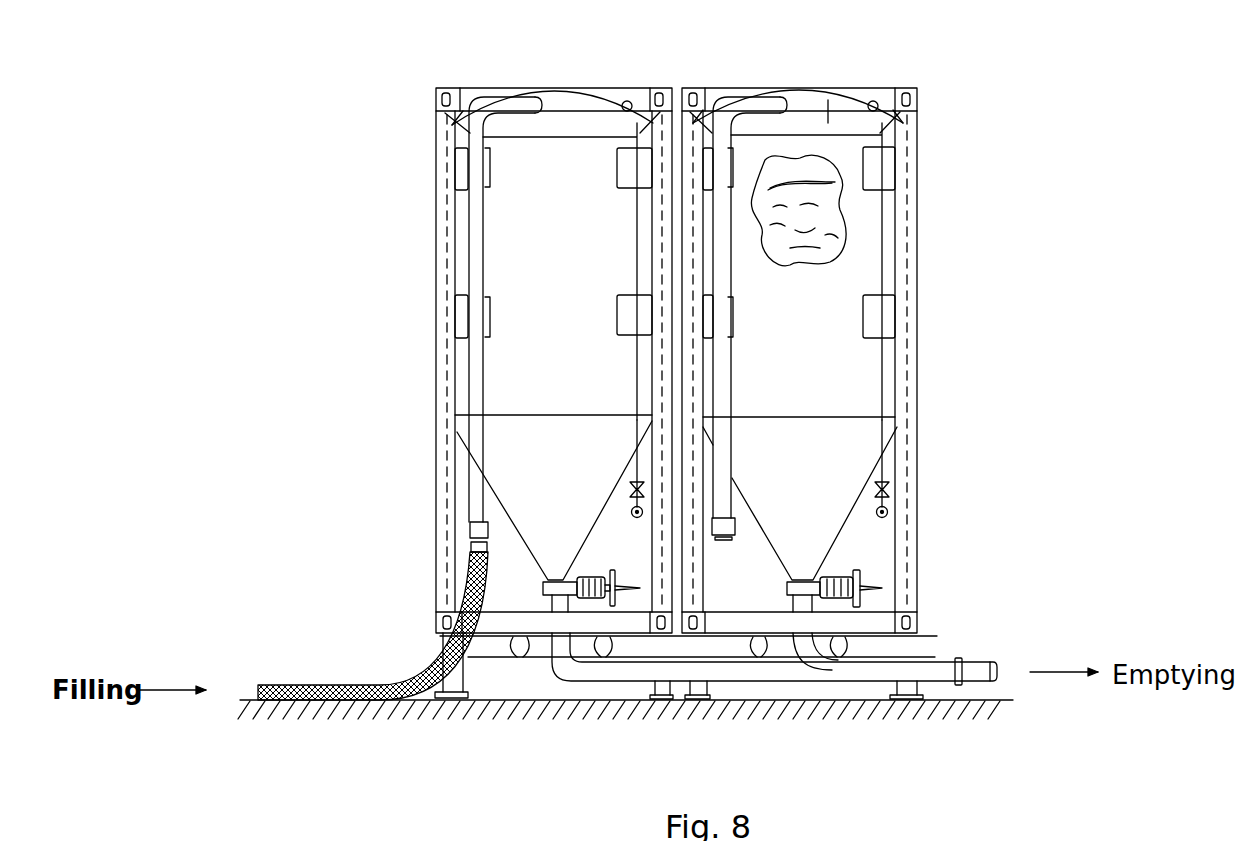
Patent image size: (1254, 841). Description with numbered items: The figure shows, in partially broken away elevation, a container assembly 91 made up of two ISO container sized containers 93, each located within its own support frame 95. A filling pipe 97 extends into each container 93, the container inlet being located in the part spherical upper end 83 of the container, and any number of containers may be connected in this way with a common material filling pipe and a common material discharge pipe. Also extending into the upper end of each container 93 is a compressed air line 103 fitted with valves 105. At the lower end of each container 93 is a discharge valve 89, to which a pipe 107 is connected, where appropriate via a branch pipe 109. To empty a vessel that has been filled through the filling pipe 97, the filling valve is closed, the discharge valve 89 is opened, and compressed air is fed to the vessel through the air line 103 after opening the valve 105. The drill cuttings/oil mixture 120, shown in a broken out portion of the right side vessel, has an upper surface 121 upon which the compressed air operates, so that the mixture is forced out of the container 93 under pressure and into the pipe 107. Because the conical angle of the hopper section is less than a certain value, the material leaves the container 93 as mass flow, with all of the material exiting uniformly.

The upper end 83 is at (575, 113).
The container assembly 91 is at (823, 81).
The container 93 is at (513, 233).
The support frame 95 is at (437, 310).
The filling pipe 97 is at (362, 682).
The discharge valve 89 is at (590, 578).
The compressed air line 103 is at (637, 355).
The valve 105 is at (630, 485).
The pipe 107 is at (560, 678).
The branch pipe 109 is at (793, 657).
The drill cuttings/oil mixture 120 is at (825, 222).
The upper surface 121 is at (818, 183).